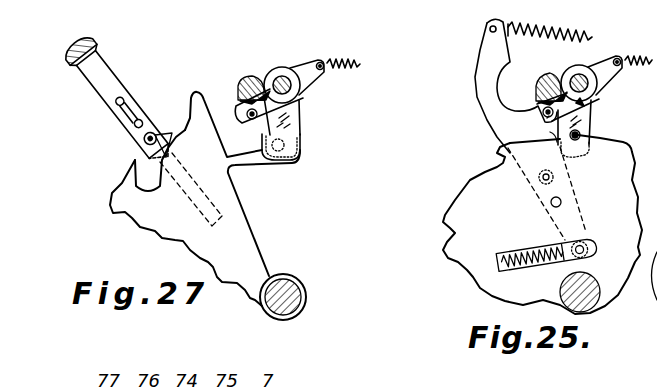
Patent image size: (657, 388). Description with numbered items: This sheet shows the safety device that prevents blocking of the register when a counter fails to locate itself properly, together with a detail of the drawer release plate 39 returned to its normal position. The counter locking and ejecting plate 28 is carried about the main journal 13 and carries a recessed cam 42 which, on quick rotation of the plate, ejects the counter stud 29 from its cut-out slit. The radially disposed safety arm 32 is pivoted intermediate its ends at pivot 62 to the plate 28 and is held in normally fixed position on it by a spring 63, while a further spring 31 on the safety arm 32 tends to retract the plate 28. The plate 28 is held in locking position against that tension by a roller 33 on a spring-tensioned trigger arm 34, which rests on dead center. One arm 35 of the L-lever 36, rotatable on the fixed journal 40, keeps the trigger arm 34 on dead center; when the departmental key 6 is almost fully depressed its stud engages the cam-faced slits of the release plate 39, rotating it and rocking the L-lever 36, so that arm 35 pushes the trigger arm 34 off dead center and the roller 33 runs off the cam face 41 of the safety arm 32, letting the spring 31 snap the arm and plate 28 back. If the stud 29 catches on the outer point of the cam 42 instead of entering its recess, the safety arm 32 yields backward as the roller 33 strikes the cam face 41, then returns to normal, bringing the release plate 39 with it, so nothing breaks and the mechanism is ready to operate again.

In FIG. 27, the departmental key 6 is at (107, 74).
In FIG. 25, the main journal 13 is at (590, 300).
In FIG. 25, the counter locking and ejecting plate 28 is at (542, 224).
In FIG. 25, the counter stud 29 is at (582, 136).
In FIG. 25, the spring 31 is at (547, 30).
In FIG. 25, the safety arm 32 is at (482, 77).
In FIG. 27, the roller 33 is at (250, 119).
In FIG. 25, the roller 33 is at (545, 107).
In FIG. 27, the trigger arm 34 is at (238, 106).
In FIG. 25, the trigger arm 34 is at (597, 104).
In FIG. 27, the arm of L-lever 35 is at (244, 78).
In FIG. 25, the arm of L-lever 35 is at (546, 73).
In FIG. 27, the L-lever 36 is at (289, 118).
In FIG. 25, the L-lever 36 is at (592, 120).
In FIG. 27, the drawer release plate 39 is at (237, 229).
In FIG. 27, the fixed journal 40 is at (280, 78).
In FIG. 25, the fixed journal 40 is at (582, 78).
In FIG. 25, the cam face 41 is at (547, 118).
In FIG. 25, the cam 42 is at (550, 132).
In FIG. 25, the pivot 62 is at (551, 202).
In FIG. 25, the spring 63 is at (510, 260).